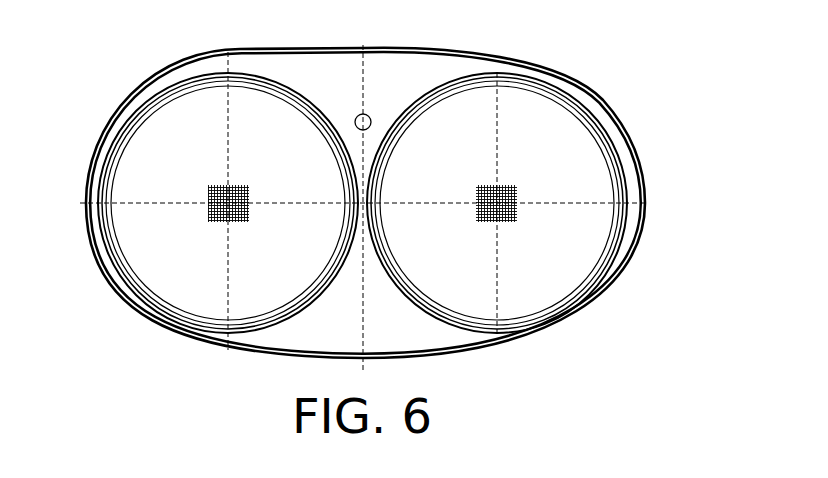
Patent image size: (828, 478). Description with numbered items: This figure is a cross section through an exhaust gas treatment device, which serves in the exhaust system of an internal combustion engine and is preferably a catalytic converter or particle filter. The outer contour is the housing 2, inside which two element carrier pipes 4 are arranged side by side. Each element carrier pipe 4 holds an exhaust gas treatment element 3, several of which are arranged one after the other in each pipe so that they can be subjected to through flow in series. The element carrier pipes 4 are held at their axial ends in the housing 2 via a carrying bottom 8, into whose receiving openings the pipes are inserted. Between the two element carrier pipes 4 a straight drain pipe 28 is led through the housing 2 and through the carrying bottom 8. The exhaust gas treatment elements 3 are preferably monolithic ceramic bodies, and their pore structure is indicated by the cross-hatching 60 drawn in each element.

The housing 2 is at (614, 117).
The exhaust gas treatment element 3 is at (272, 159).
The element carrier pipe 4 is at (308, 90).
The carrying bottom 8 is at (421, 82).
The drain pipe 28 is at (368, 114).
The cross-hatching 60 is at (215, 184).